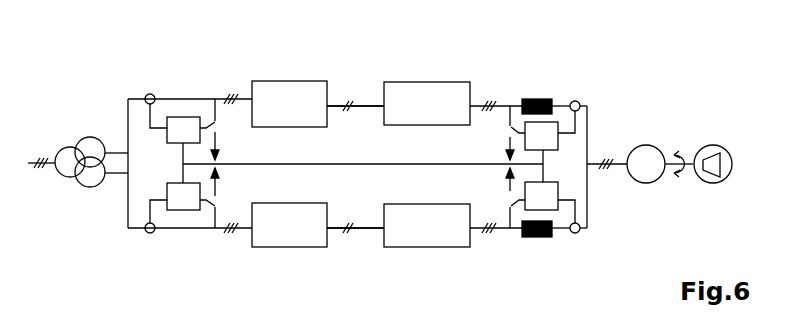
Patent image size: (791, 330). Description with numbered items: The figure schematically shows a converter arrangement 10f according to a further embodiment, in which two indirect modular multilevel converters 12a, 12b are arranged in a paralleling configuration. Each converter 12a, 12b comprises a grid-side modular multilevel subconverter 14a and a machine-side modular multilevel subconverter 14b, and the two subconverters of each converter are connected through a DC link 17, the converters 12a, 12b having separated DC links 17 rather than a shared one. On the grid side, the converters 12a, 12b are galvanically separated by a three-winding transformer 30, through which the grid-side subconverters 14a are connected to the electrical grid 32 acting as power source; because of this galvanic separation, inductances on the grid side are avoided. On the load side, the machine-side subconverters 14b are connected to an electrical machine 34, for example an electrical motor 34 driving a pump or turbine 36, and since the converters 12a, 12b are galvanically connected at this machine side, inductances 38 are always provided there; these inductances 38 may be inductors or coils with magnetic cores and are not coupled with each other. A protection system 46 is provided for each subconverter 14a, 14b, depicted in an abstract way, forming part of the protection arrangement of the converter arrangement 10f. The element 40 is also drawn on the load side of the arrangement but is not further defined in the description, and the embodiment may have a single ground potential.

The converter arrangement 10f is at (637, 66).
The modular multilevel converter 12a is at (176, 68).
The modular multilevel converter 12b is at (203, 265).
The modular multilevel subconverter 14a is at (288, 81).
The modular multilevel subconverter 14b is at (450, 82).
The DC link 17 is at (363, 106).
The transformer 30 is at (95, 192).
The electrical grid 32 is at (53, 165).
The electrical machine 34 is at (642, 183).
The pump or turbine 36 is at (712, 183).
The inductance 38 is at (540, 98).
The output bus / coupling 40 is at (588, 160).
The protection system 46 is at (177, 122).